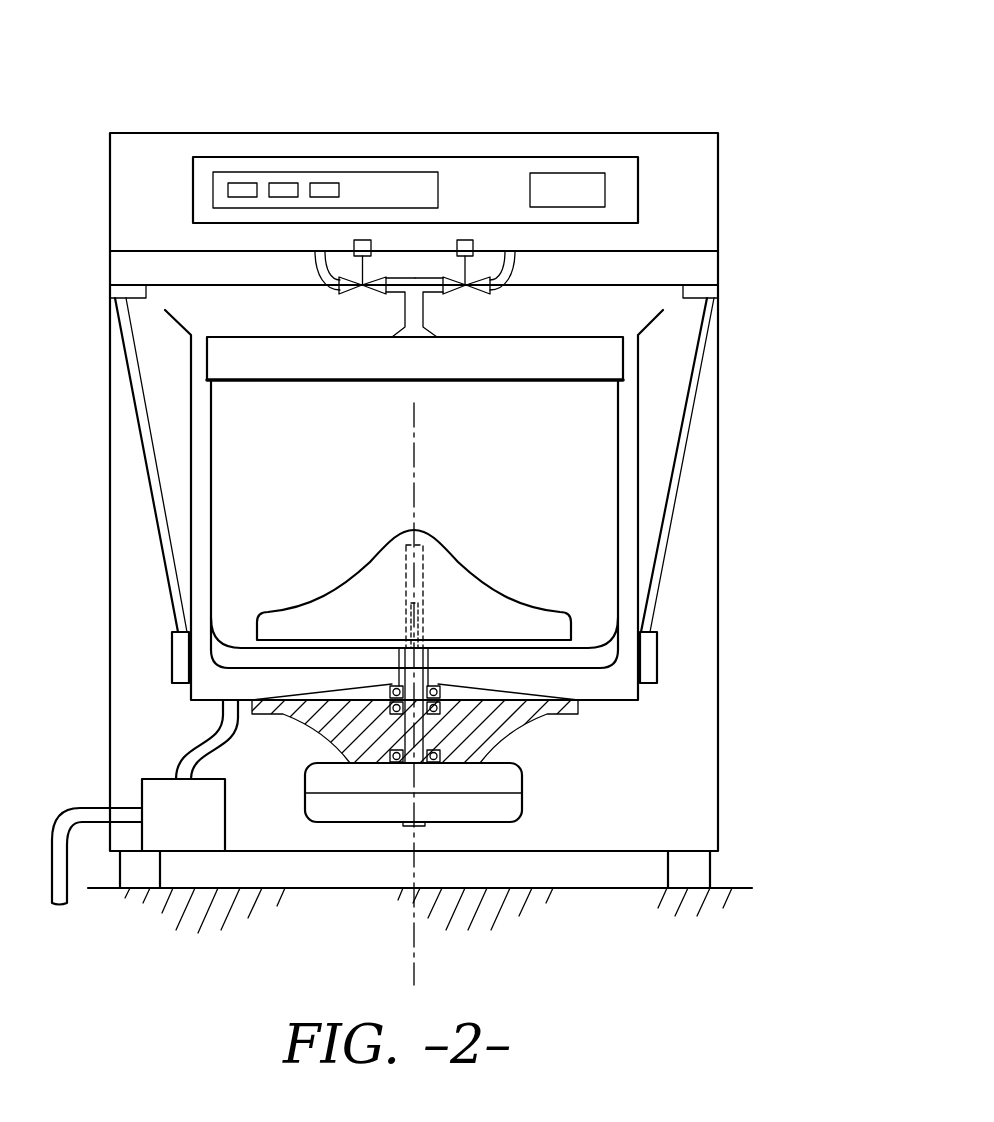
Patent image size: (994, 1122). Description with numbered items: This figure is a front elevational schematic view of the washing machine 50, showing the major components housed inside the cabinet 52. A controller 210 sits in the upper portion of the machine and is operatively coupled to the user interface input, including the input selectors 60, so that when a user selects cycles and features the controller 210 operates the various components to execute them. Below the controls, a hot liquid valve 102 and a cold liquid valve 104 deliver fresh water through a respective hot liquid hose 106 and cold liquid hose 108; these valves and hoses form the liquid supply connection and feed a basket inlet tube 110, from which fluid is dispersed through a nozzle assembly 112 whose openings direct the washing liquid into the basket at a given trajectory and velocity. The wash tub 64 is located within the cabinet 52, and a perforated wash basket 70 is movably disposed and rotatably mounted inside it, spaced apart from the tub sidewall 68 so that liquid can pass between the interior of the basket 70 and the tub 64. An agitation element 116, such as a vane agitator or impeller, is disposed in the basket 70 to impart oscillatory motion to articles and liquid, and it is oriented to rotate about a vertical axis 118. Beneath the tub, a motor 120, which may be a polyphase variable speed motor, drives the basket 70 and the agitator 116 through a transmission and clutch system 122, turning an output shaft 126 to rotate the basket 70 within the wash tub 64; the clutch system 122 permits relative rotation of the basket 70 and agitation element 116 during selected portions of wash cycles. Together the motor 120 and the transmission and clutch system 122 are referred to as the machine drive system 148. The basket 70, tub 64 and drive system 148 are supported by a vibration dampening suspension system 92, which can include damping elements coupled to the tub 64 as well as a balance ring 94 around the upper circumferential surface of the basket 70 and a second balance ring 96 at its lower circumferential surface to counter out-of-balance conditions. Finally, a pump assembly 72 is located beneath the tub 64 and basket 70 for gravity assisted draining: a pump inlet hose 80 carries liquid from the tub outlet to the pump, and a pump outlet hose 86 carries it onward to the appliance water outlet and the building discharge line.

The washing machine 50 is at (176, 68).
The cabinet 52 is at (718, 443).
The input selectors 60 is at (190, 690).
The wash tub 64 is at (188, 428).
The sidewall 68 is at (638, 498).
The basket 70 is at (212, 520).
The pump assembly 72 is at (155, 793).
The pump inlet hose 80 is at (183, 745).
The pump outlet hose 86 is at (60, 823).
The vibration dampening suspension system 92 is at (128, 375).
The balance ring 94 is at (262, 353).
The balance ring 96 is at (603, 652).
The hot liquid valve 102 is at (365, 245).
The cold liquid valve 104 is at (469, 245).
The hot liquid hose 106 is at (317, 268).
The cold liquid hose 108 is at (512, 270).
The basket inlet tube 110 is at (430, 327).
The nozzle assembly 112 is at (393, 327).
The agitation element 116 is at (450, 553).
The vertical axis 118 is at (414, 482).
The motor 120 is at (510, 805).
The transmission and clutch system 122 is at (508, 780).
The output shaft 126 is at (410, 735).
The machine drive system 148 is at (623, 705).
The controller 210 is at (625, 181).